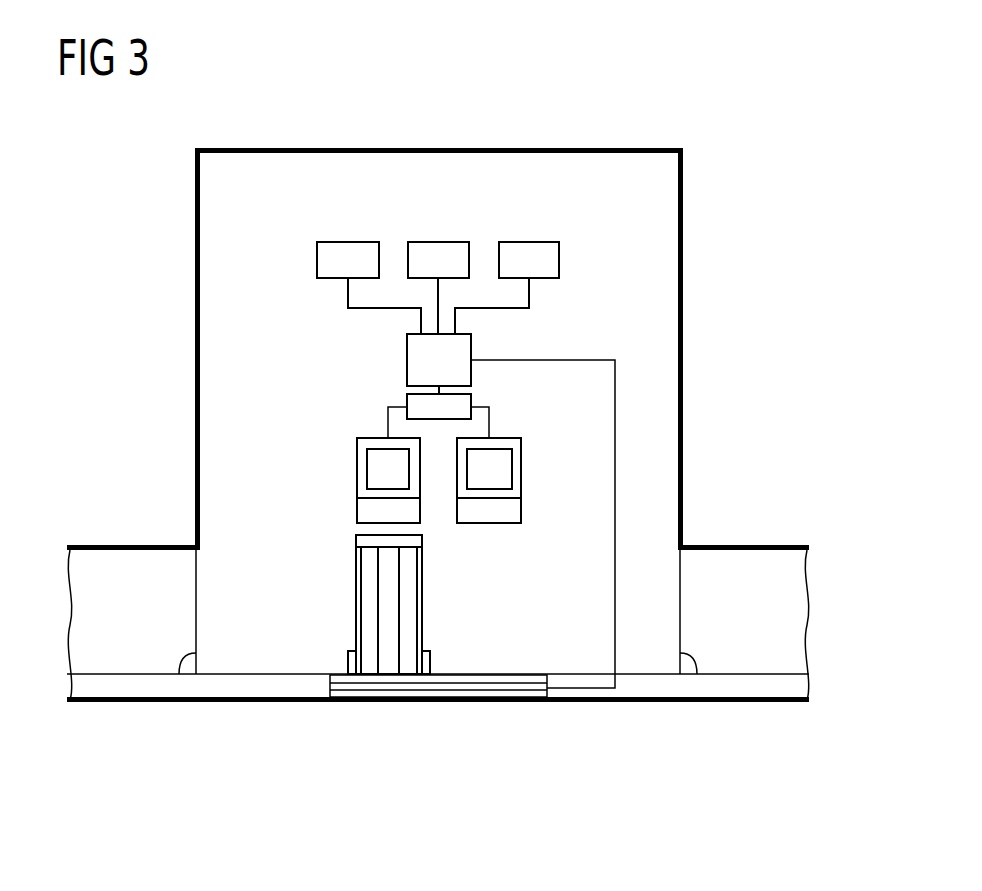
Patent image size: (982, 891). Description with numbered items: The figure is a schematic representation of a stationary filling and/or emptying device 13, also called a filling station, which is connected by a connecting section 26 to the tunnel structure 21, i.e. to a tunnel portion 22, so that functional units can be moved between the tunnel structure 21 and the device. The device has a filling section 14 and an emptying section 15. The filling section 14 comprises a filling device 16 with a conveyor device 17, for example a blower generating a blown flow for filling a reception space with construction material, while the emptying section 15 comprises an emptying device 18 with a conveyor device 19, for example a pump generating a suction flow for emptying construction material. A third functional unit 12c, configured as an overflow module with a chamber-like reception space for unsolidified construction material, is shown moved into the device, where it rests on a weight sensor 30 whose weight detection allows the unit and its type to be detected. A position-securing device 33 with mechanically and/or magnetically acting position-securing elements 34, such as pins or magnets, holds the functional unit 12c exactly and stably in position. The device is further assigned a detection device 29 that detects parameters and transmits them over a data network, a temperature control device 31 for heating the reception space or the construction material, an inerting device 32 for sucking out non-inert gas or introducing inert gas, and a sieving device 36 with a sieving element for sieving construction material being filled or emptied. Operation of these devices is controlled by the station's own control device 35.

The filling and/or emptying device 13 is at (594, 130).
The tunnel structure 21 is at (102, 545).
The tunnel portion 22 is at (745, 545).
The connecting section 26 is at (178, 660).
The temperature control device 31 is at (348, 242).
The inerting device 32 is at (437, 242).
The control device 35 is at (528, 242).
The detection device 29 is at (407, 354).
The position-securing device 33 is at (512, 673).
The sieving device 36 is at (473, 402).
The emptying device 18 is at (362, 465).
The conveyor device 19 is at (380, 460).
The emptying section 15 is at (368, 512).
The filling device 16 is at (517, 465).
The conveyor device 17 is at (487, 477).
The filling section 14 is at (510, 512).
The third functional unit 12c is at (355, 605).
The position-securing element 34 is at (347, 658).
The weight sensor 30 is at (468, 687).